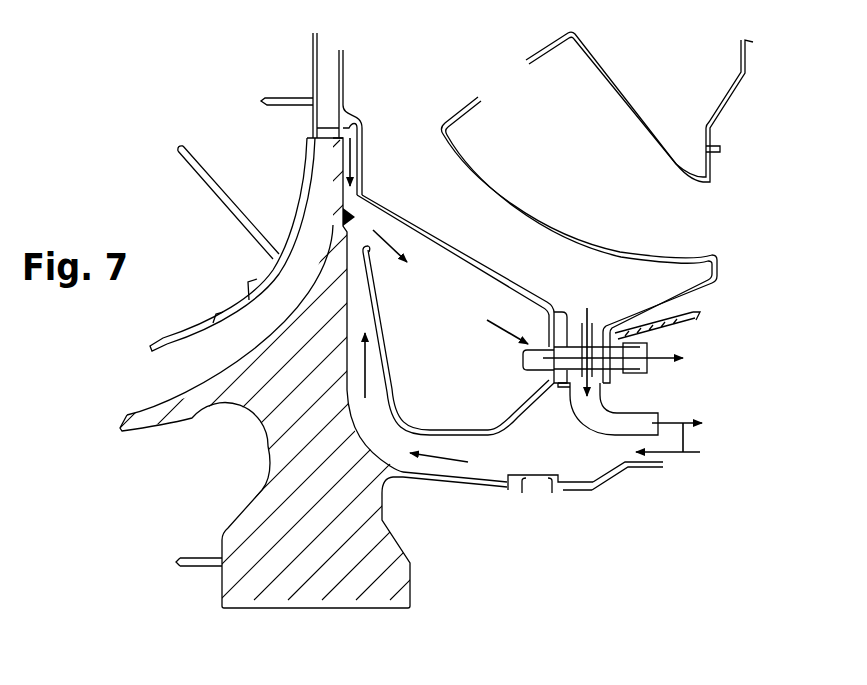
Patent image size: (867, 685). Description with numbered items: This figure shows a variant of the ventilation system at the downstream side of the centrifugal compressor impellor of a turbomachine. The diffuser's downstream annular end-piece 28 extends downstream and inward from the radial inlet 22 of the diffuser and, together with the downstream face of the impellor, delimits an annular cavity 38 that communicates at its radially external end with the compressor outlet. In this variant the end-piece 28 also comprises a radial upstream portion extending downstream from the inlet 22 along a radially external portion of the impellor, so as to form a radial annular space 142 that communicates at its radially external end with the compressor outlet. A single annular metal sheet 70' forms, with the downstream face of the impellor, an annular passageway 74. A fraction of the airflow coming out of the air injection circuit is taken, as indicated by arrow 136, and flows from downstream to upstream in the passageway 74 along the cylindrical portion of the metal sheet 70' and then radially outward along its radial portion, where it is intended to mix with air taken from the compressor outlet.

The radial inlet of the diffuser 22 is at (345, 76).
The radial annular space 142 is at (357, 195).
The downstream annular end-piece 28 is at (487, 250).
The annular passageway 74 is at (375, 370).
The annular cavity 38 is at (568, 352).
The annular metal sheet 70' is at (444, 421).
The arrow (fraction of airflow taken from circuit) 136 is at (660, 434).